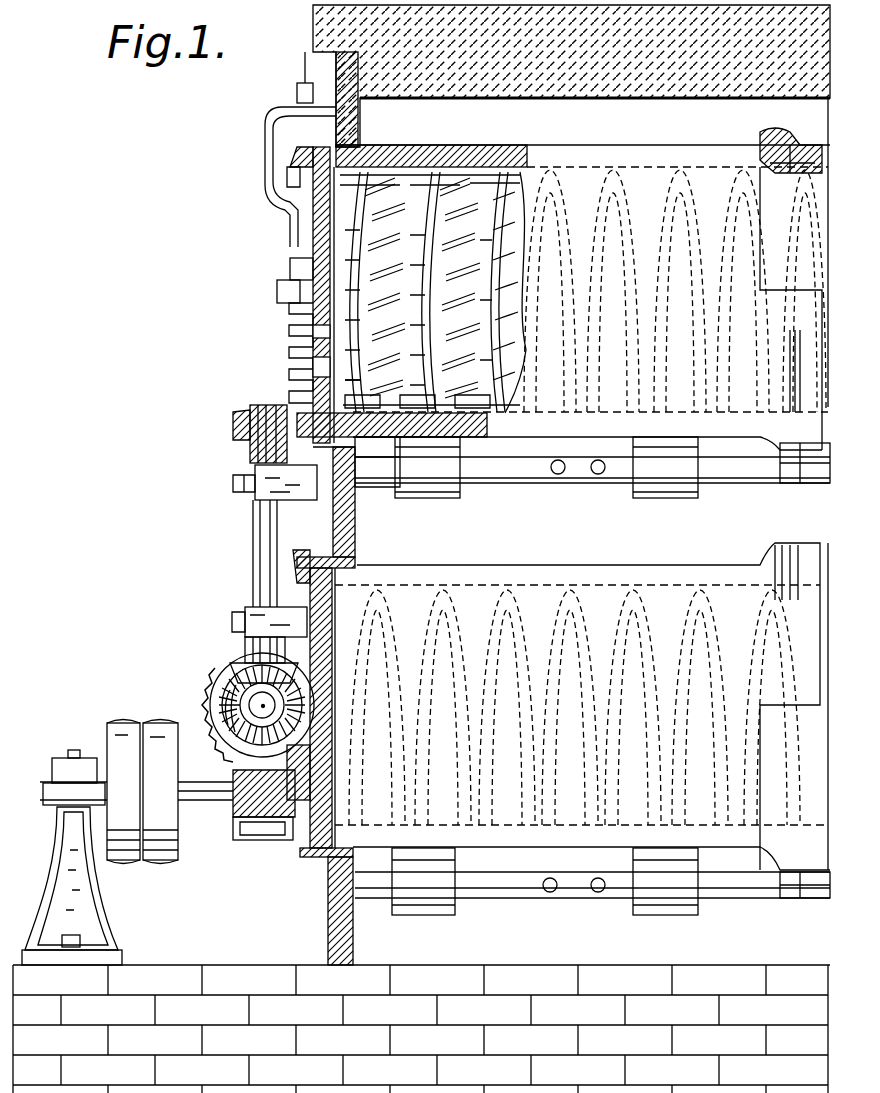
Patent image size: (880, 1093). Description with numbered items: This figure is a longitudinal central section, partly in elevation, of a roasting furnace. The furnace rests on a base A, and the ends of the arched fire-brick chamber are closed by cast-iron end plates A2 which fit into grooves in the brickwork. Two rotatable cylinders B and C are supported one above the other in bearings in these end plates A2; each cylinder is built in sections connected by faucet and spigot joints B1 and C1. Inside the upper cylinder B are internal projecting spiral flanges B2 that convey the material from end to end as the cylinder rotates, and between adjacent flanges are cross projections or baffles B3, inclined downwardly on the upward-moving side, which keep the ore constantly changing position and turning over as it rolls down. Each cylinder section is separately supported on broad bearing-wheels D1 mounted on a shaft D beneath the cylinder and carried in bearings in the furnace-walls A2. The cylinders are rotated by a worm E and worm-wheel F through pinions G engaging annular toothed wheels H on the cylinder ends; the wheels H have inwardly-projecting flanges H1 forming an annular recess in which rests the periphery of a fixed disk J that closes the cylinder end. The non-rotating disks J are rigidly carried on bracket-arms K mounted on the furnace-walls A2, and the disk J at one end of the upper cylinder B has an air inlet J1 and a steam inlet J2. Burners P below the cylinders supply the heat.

The base A is at (767, 1057).
The cast-iron end plate A2 is at (350, 80).
The upper rotatable cylinder B is at (660, 173).
The faucet and spigot joint B1 is at (777, 138).
The internal spiral flange B2 is at (345, 238).
The cross projection or baffle B3 is at (463, 173).
The lower rotatable cylinder C is at (507, 812).
The faucet and spigot joint C1 is at (793, 877).
The shaft D is at (790, 465).
The bearing-wheel D1 is at (713, 927).
The worm E is at (233, 840).
The worm-wheel F is at (208, 675).
The pinion G is at (240, 428).
The annular toothed wheel H is at (300, 153).
The inwardly-projecting flange H1 is at (287, 413).
The fixed disk J is at (327, 220).
The air inlet J1 is at (320, 362).
The steam inlet J2 is at (325, 332).
The bracket-arm K is at (280, 128).
The burner P is at (598, 463).